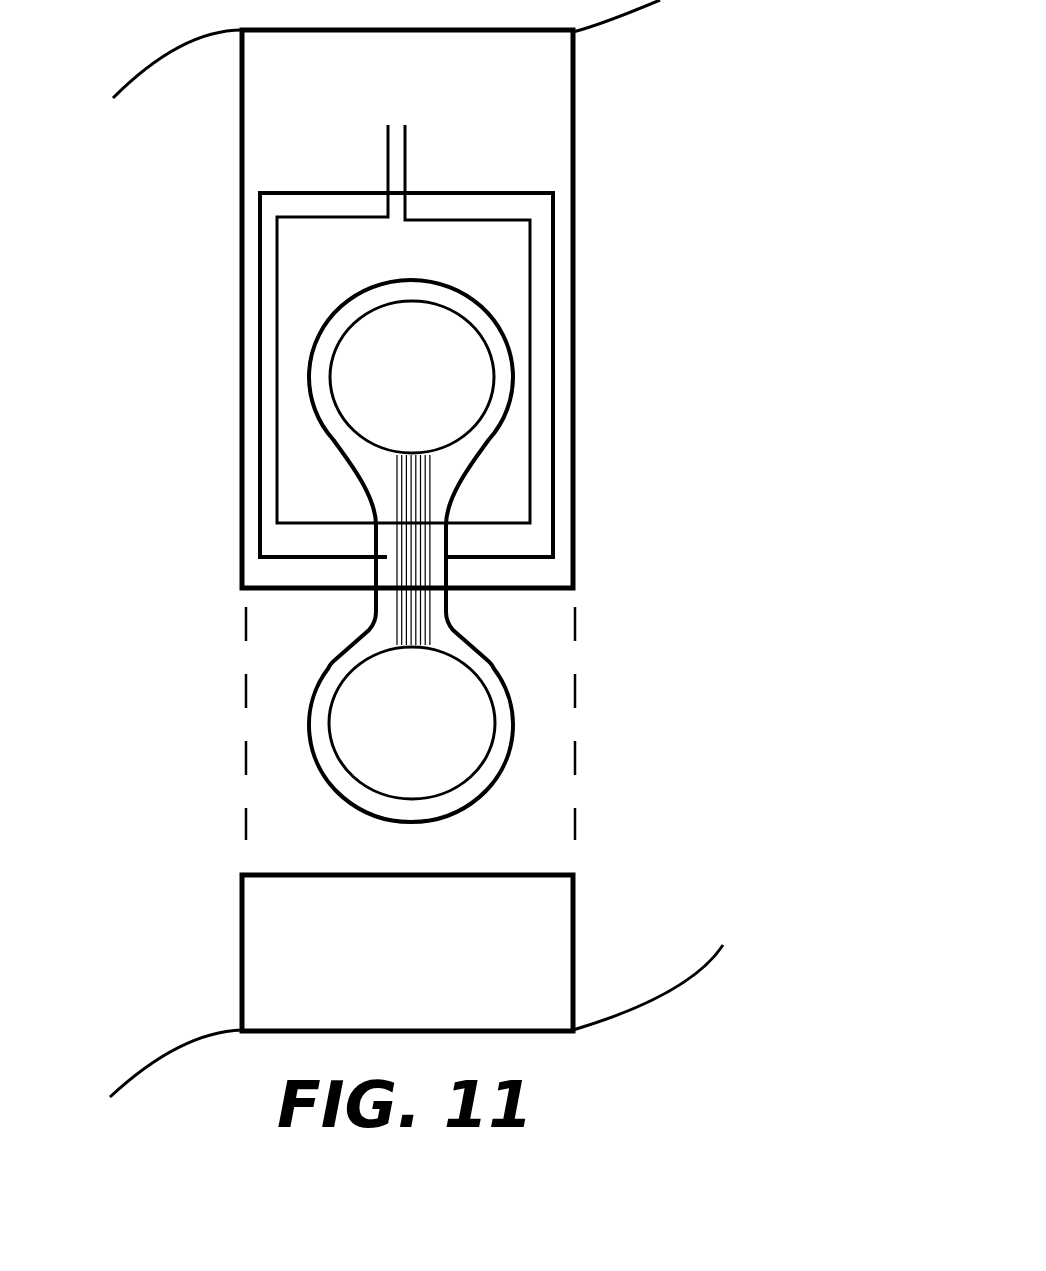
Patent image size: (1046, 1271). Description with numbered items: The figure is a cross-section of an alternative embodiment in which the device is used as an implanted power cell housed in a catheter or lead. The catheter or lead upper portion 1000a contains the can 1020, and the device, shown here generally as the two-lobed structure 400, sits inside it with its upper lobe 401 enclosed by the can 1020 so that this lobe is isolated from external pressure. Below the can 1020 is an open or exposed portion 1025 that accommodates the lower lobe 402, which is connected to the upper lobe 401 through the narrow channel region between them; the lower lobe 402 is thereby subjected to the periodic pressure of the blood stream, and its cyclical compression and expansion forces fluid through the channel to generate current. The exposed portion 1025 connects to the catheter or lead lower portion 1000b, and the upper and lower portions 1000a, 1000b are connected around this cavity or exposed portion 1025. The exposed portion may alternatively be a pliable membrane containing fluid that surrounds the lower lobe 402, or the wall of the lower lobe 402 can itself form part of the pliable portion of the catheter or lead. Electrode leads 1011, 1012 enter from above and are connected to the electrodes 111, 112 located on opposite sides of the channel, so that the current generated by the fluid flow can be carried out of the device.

The catheter or lead upper portion 1000a is at (573, 310).
The catheter or lead lower portion 1000b is at (573, 953).
The can 1020 is at (258, 377).
The electrode 111 is at (387, 562).
The electrode 112 is at (457, 547).
The electrode lead 1011 is at (275, 323).
The electrode lead 1012 is at (530, 325).
The sensor 400 is at (227, 757).
The upper lobe 401 is at (443, 391).
The lower lobe 402 is at (452, 749).
The open or exposed portion 1025 is at (347, 846).